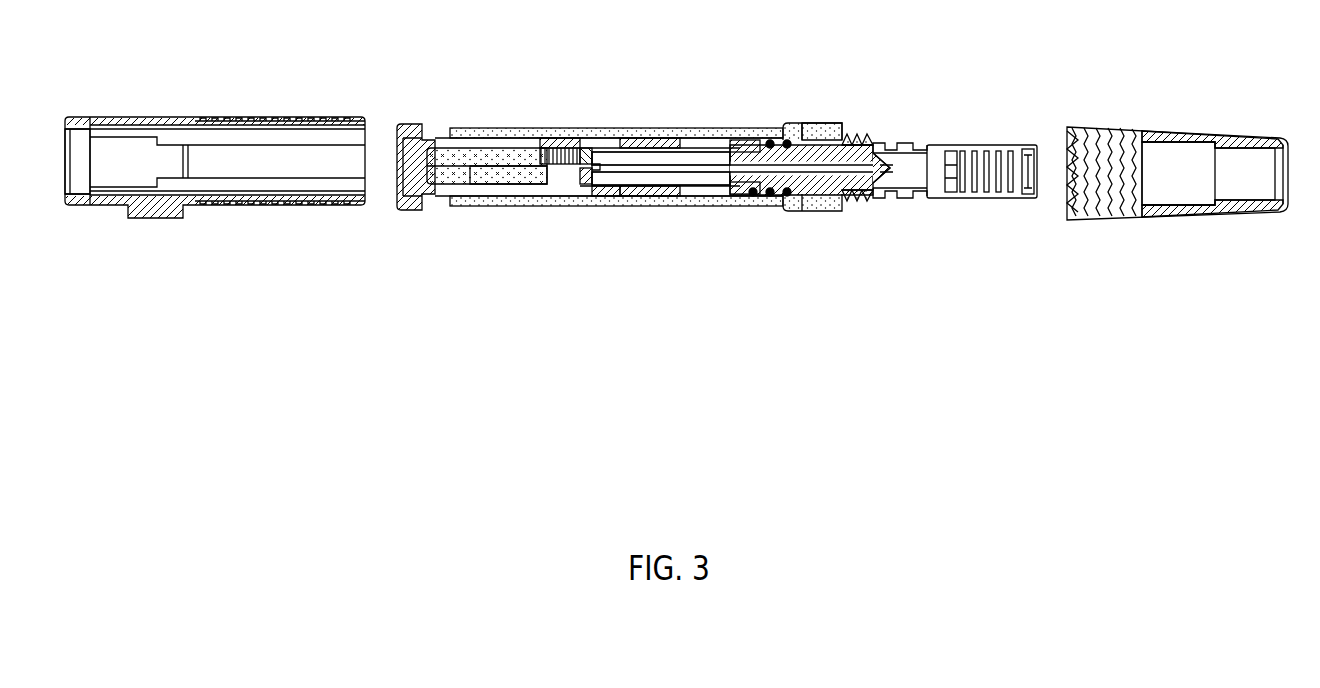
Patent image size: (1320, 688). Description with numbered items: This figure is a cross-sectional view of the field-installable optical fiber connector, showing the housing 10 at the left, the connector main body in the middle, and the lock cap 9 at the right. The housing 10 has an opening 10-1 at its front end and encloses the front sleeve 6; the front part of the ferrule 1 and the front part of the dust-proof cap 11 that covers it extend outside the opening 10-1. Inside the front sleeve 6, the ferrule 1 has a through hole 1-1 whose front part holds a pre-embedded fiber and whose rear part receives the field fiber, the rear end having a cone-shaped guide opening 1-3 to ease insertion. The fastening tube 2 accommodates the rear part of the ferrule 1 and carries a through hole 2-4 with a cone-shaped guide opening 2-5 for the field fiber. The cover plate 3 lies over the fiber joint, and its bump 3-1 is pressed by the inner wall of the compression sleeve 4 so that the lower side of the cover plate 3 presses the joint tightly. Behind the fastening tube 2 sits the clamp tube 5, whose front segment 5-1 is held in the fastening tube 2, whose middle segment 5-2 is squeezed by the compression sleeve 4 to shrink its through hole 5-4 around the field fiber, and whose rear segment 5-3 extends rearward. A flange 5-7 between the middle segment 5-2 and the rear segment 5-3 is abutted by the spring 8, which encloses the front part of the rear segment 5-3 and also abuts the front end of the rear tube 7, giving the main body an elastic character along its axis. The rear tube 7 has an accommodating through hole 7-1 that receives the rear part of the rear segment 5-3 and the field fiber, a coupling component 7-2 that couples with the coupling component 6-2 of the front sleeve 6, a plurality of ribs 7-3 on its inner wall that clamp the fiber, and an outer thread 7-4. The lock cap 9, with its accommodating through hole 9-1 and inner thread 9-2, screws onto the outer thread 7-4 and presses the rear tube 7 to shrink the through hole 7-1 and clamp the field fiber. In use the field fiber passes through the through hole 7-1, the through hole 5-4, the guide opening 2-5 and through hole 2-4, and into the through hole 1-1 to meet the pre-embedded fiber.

The ferrule 1 is at (455, 202).
The through hole 1-1 is at (483, 172).
The guide opening 1-3 is at (572, 186).
The fastening tube 2 is at (535, 202).
The through hole 2-4 is at (584, 154).
The guide opening 2-5 is at (603, 167).
The cover plate 3 is at (560, 140).
The bump 3-1 is at (545, 138).
The compression sleeve 4 is at (640, 202).
The clamp tube 5 is at (717, 190).
The front segment 5-1 is at (604, 198).
The middle segment 5-2 is at (692, 187).
The rear segment 5-3 is at (812, 196).
The through hole 5-4 is at (673, 160).
The flange 5-7 is at (740, 148).
The front sleeve 6 is at (767, 127).
The coupling component 6-2 is at (810, 127).
The rear tube 7 is at (983, 201).
The accommodating through hole 7-1 is at (907, 173).
The coupling component 7-2 is at (818, 138).
The ribs 7-3 is at (982, 140).
The outer thread 7-4 is at (862, 138).
The spring 8 is at (758, 196).
The lock cap 9 is at (1168, 224).
The accommodating through hole 9-1 is at (1196, 162).
The inner thread 9-2 is at (1110, 135).
The housing 10 is at (203, 222).
The opening 10-1 is at (64, 160).
The dust-proof cap 11 is at (412, 202).